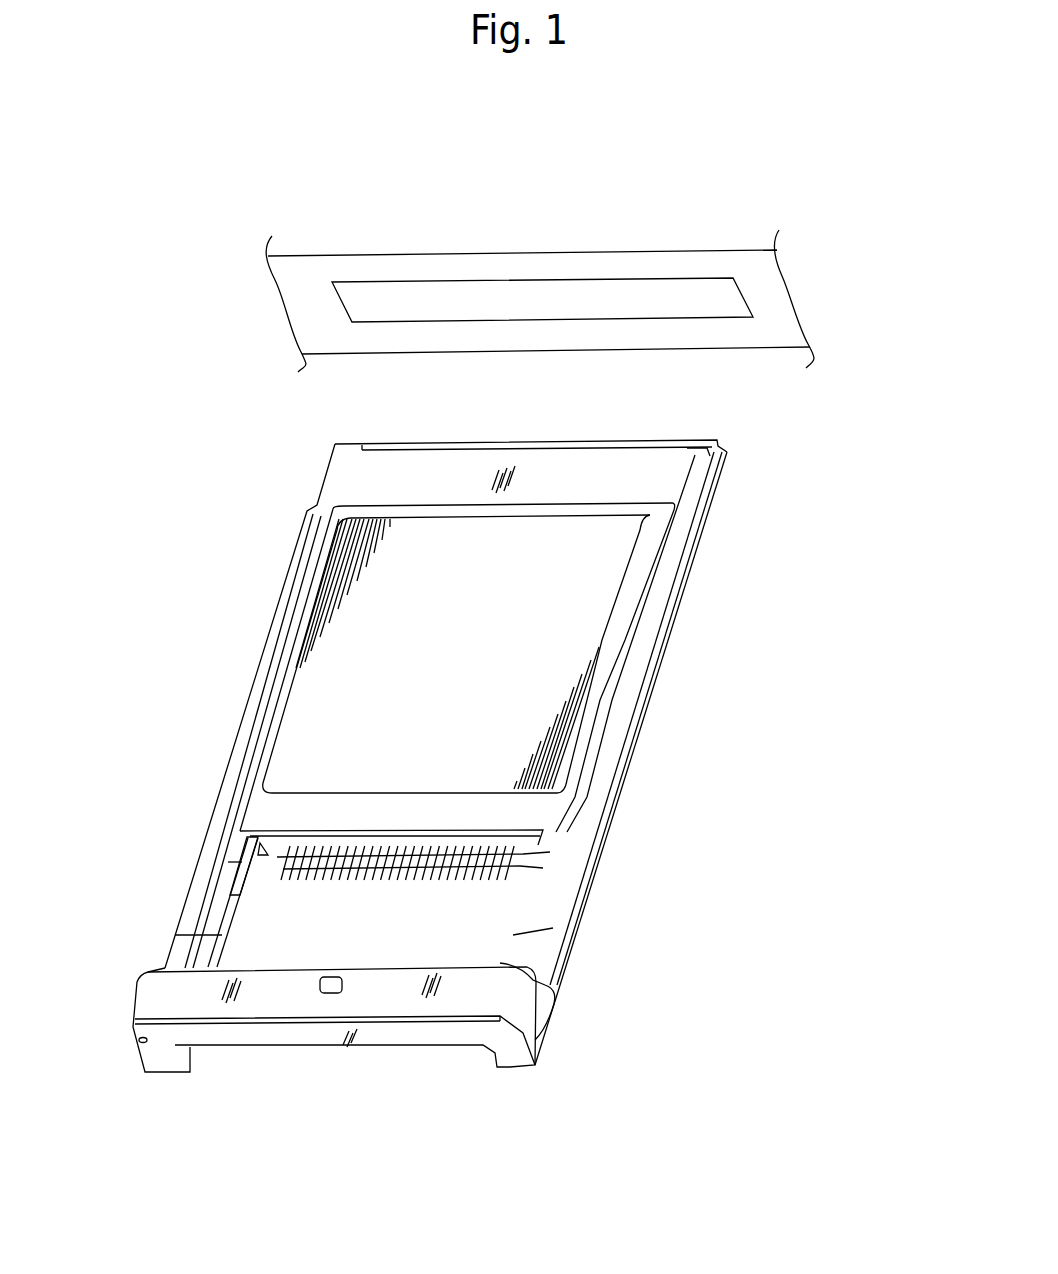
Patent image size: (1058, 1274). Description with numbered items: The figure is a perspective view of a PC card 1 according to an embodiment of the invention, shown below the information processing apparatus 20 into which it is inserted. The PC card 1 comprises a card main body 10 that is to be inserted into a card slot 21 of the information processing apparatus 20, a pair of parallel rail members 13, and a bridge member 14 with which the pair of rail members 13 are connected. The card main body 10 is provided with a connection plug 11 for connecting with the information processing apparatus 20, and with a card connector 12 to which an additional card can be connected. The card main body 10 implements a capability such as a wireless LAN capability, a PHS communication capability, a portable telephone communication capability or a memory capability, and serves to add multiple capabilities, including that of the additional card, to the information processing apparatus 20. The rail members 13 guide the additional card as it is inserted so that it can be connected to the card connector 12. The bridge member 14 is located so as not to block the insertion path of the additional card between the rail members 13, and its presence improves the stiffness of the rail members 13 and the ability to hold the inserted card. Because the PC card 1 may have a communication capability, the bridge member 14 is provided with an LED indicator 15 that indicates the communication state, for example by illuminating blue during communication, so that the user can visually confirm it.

The PC card 1 is at (228, 592).
The card main body 10 is at (580, 632).
The connection plug 11 is at (612, 441).
The card connector 12 is at (520, 870).
The rail members 13 is at (203, 890).
The bridge member 14 is at (385, 1033).
The LED indicator 15 is at (331, 993).
The information processing apparatus 20 is at (320, 268).
The card slot 21 is at (597, 290).